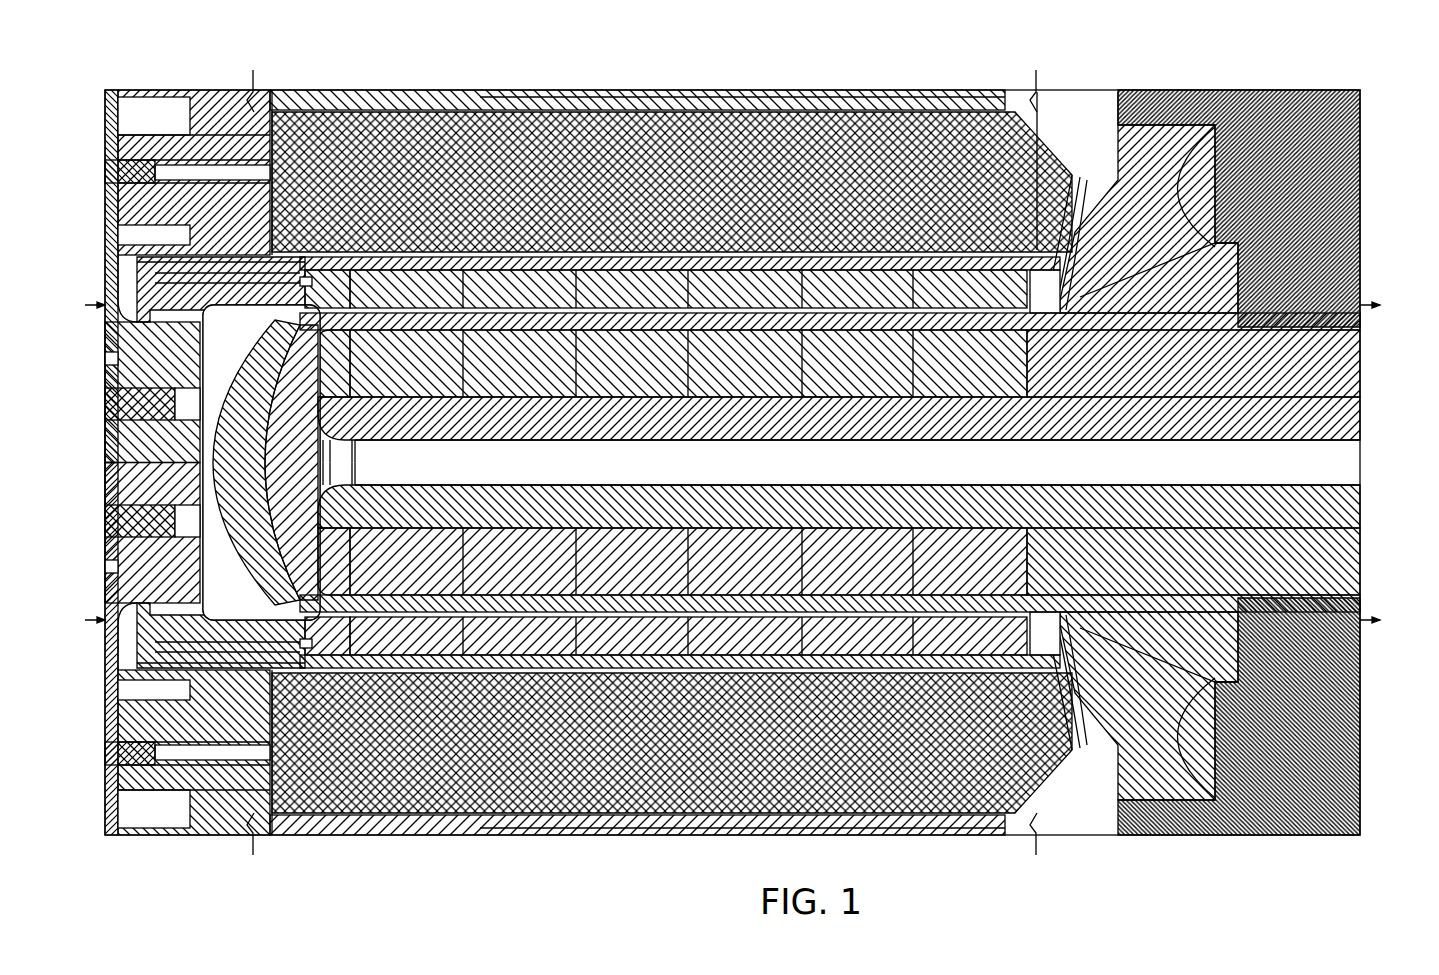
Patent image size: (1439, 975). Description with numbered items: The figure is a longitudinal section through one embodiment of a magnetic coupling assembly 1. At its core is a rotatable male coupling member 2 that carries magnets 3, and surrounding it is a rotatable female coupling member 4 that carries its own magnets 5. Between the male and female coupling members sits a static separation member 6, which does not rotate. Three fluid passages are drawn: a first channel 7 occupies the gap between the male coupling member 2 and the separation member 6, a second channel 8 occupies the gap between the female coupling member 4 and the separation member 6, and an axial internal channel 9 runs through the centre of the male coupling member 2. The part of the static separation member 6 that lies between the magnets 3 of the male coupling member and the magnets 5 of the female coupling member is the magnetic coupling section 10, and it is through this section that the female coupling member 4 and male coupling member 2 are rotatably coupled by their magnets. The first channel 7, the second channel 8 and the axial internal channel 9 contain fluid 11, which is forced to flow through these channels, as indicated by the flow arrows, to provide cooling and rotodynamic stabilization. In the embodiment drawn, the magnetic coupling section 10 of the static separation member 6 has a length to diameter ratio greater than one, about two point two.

The magnetic coupling assembly 1 is at (650, 72).
The rotatable male coupling member 2 is at (1335, 358).
The magnets 3 is at (1010, 378).
The rotatable female coupling member 4 is at (327, 280).
The magnets 5 is at (418, 287).
The static separation member 6 is at (443, 317).
The first channel 7 is at (785, 330).
The second channel 8 is at (652, 275).
The axial internal channel 9 is at (1345, 470).
The magnetic coupling section 10 is at (1027, 878).
The fluid 11 is at (1068, 115).